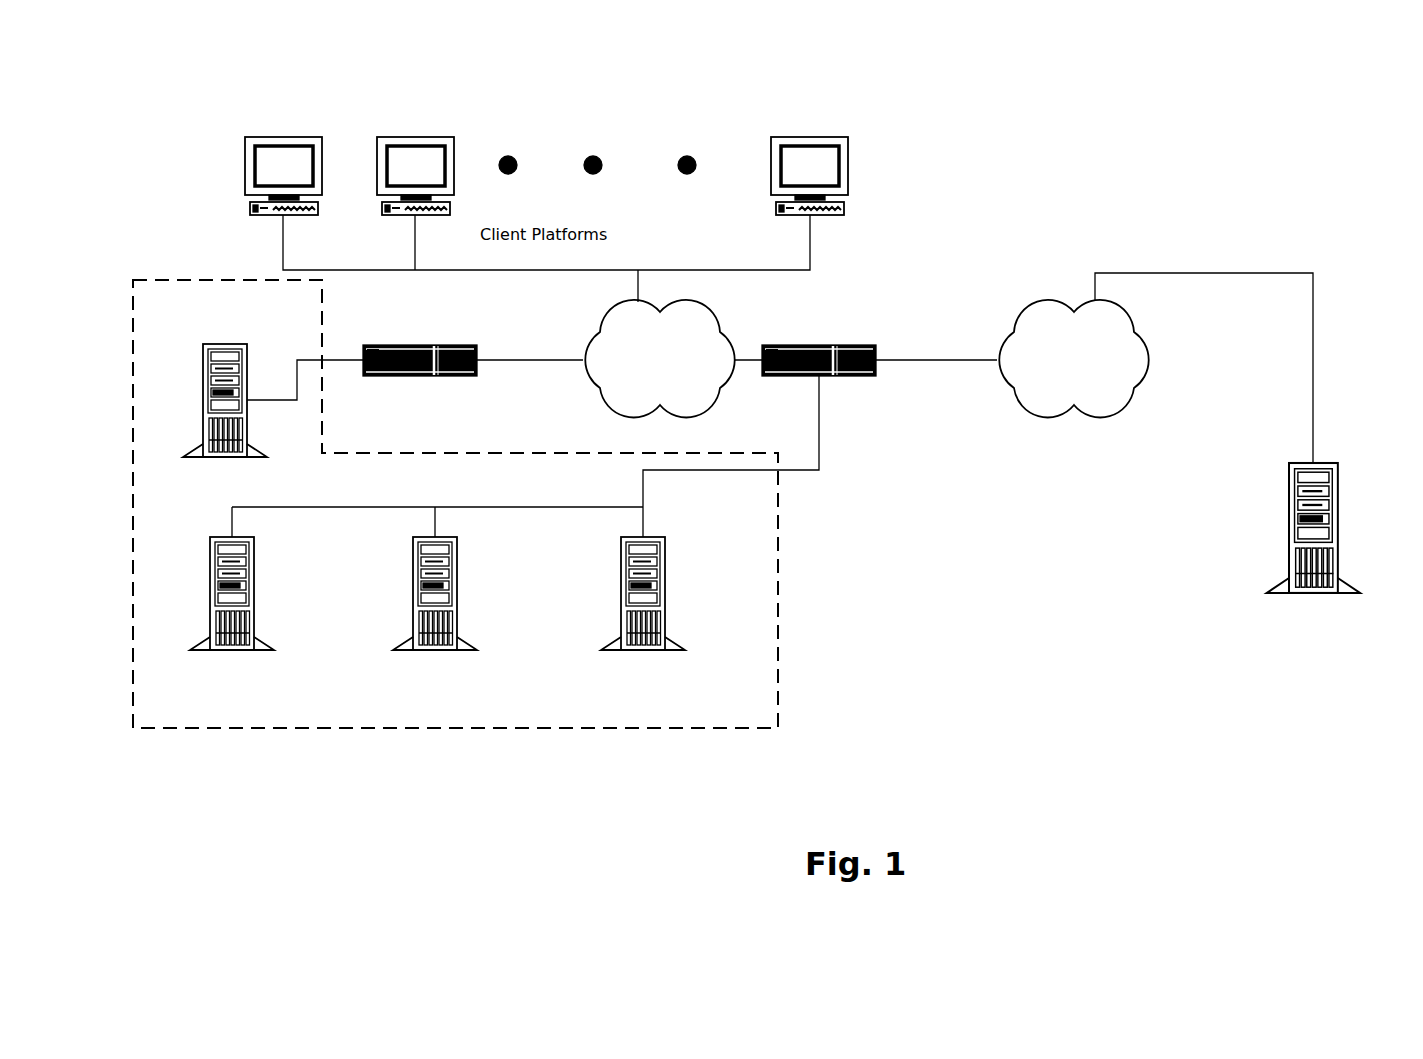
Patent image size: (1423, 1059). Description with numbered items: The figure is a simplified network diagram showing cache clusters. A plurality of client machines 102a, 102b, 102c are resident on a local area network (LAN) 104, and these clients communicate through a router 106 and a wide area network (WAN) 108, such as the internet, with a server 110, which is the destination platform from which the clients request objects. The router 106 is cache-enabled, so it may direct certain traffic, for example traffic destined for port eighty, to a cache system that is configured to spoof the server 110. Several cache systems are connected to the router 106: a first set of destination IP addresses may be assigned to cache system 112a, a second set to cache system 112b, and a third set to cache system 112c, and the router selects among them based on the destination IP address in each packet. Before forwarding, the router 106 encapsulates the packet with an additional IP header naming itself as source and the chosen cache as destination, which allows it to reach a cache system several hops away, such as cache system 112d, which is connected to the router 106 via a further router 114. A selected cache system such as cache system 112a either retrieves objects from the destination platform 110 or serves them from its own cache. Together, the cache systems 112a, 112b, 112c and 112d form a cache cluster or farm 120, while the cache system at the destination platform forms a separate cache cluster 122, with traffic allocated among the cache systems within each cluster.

The client machine 102a is at (297, 136).
The client machine 102b is at (429, 136).
The client machine 102c is at (823, 136).
The local area network (LAN) 104 is at (683, 302).
The router 106 is at (821, 345).
The wide area network (WAN) 108 is at (1048, 304).
The server 110 is at (1273, 544).
The cache cluster 122 is at (1289, 528).
The cache system 112a is at (210, 598).
The cache system 112b is at (413, 598).
The cache system 112c is at (621, 598).
The cache system 112d is at (203, 408).
The router 114 is at (420, 345).
The cache cluster 120 is at (778, 595).